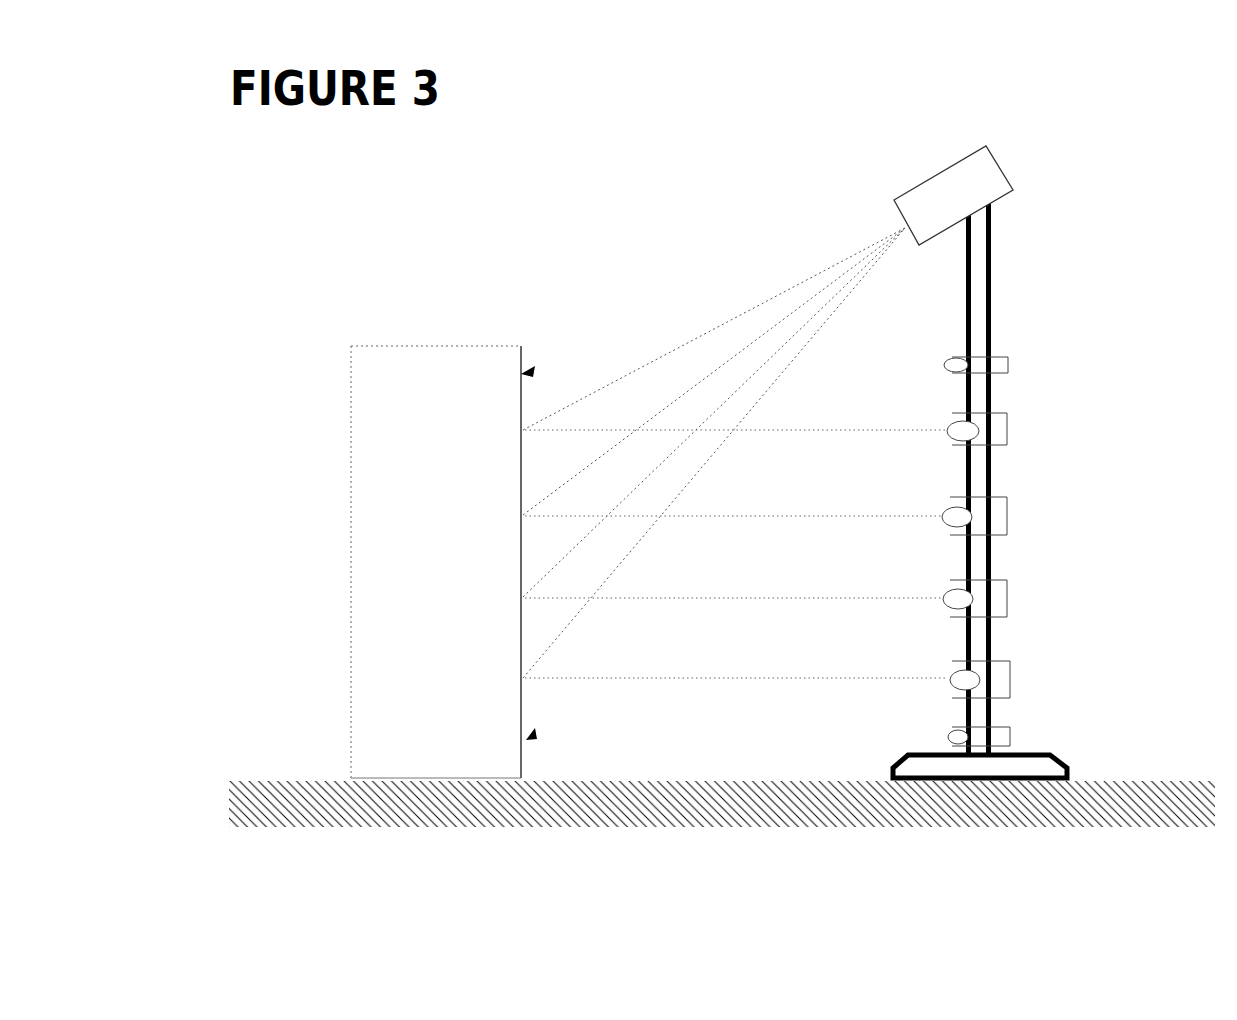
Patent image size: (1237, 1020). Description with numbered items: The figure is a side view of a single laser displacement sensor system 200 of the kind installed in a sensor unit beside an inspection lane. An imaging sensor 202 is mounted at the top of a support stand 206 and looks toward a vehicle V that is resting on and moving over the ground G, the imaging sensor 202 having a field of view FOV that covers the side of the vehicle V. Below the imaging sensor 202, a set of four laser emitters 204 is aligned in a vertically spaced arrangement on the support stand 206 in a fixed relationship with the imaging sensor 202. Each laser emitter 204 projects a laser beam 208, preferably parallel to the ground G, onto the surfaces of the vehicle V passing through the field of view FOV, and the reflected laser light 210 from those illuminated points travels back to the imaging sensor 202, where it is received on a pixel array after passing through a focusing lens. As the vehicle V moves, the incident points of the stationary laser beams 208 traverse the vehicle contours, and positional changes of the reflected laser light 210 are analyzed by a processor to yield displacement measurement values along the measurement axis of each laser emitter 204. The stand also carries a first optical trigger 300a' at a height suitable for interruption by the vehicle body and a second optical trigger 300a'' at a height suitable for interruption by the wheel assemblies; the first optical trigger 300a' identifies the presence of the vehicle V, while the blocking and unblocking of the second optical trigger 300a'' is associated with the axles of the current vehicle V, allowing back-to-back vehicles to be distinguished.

The laser displacement sensor system 200 is at (961, 440).
The imaging sensor 202 is at (940, 168).
The laser emitter 204 is at (1013, 428).
The support stand 206 is at (995, 317).
The laser beam 208 is at (803, 427).
The reflected laser light 210 is at (720, 312).
The first optical trigger 300a' is at (1054, 332).
The second optical trigger 300a'' is at (1059, 706).
The vehicle V is at (383, 478).
The ground G is at (305, 792).
The field of view FOV is at (598, 338).